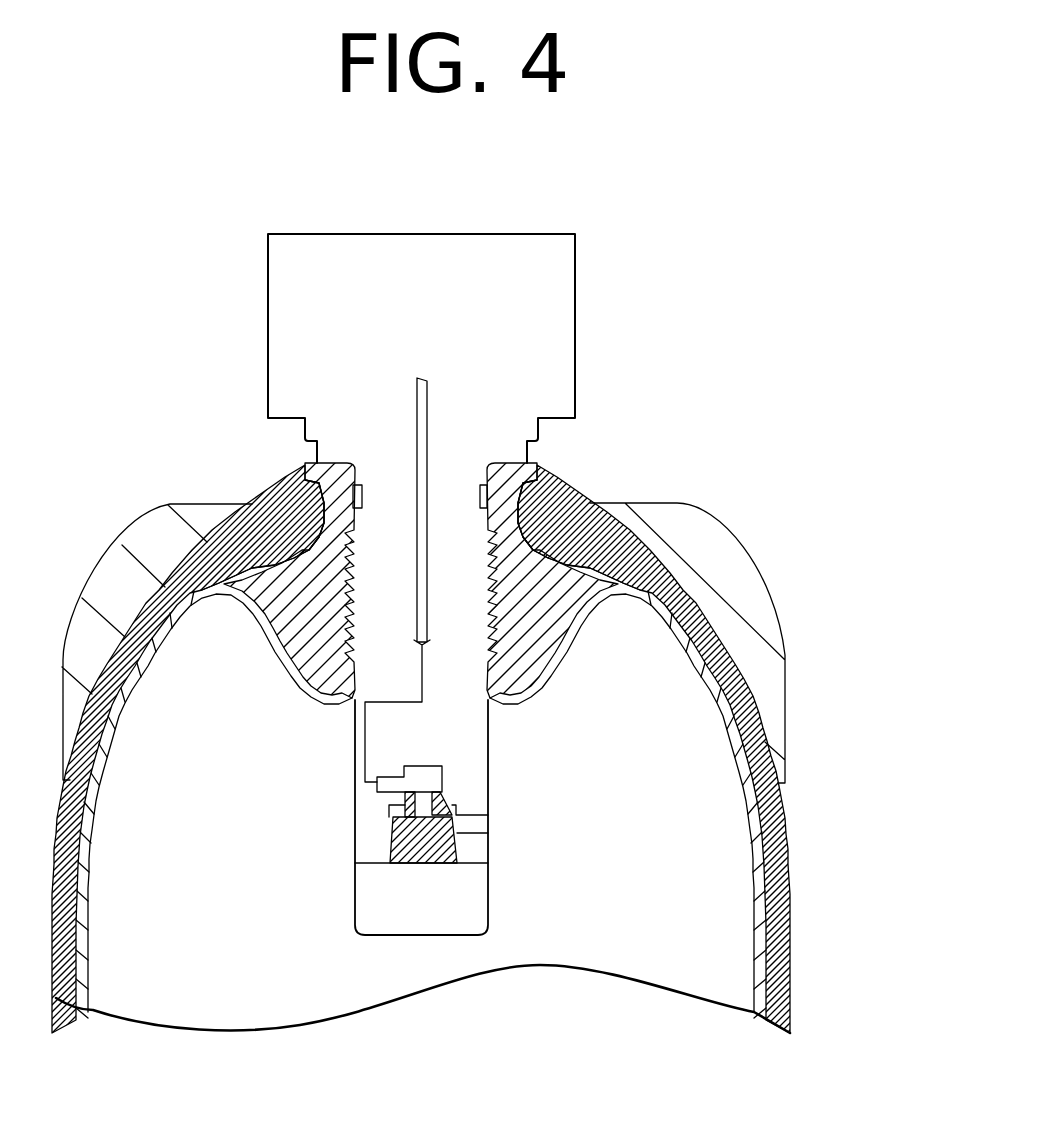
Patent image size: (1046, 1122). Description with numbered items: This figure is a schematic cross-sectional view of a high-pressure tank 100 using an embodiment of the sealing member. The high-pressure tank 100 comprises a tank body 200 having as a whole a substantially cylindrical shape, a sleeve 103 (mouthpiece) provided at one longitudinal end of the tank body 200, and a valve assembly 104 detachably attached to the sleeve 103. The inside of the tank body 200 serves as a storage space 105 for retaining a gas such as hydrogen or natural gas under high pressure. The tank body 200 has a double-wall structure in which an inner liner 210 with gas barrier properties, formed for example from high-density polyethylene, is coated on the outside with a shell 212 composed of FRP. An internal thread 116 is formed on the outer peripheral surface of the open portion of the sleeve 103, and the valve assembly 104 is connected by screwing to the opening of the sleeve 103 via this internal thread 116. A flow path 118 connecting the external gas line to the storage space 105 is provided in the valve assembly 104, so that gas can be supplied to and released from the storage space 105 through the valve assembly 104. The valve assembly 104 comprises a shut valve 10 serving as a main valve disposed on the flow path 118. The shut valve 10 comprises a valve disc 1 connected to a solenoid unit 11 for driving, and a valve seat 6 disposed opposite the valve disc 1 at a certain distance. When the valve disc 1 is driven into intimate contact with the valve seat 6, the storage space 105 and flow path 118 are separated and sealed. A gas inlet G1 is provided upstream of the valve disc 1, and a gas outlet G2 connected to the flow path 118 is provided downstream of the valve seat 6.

The valve assembly 104 is at (535, 255).
The flow path 118 is at (427, 390).
The sleeve 103 is at (307, 463).
The internal thread 116 is at (530, 482).
The high-pressure tank 100 is at (657, 500).
The gas outlet G2 is at (397, 778).
The valve seat 6 is at (445, 797).
The shut valve 10 is at (472, 800).
The gas inlet G1 is at (478, 826).
The valve disc 1 is at (388, 850).
The solenoid unit 11 is at (472, 890).
The shell 212 is at (783, 840).
The inner liner 210 is at (760, 888).
The tank body 200 is at (523, 732).
The storage space 105 is at (630, 955).